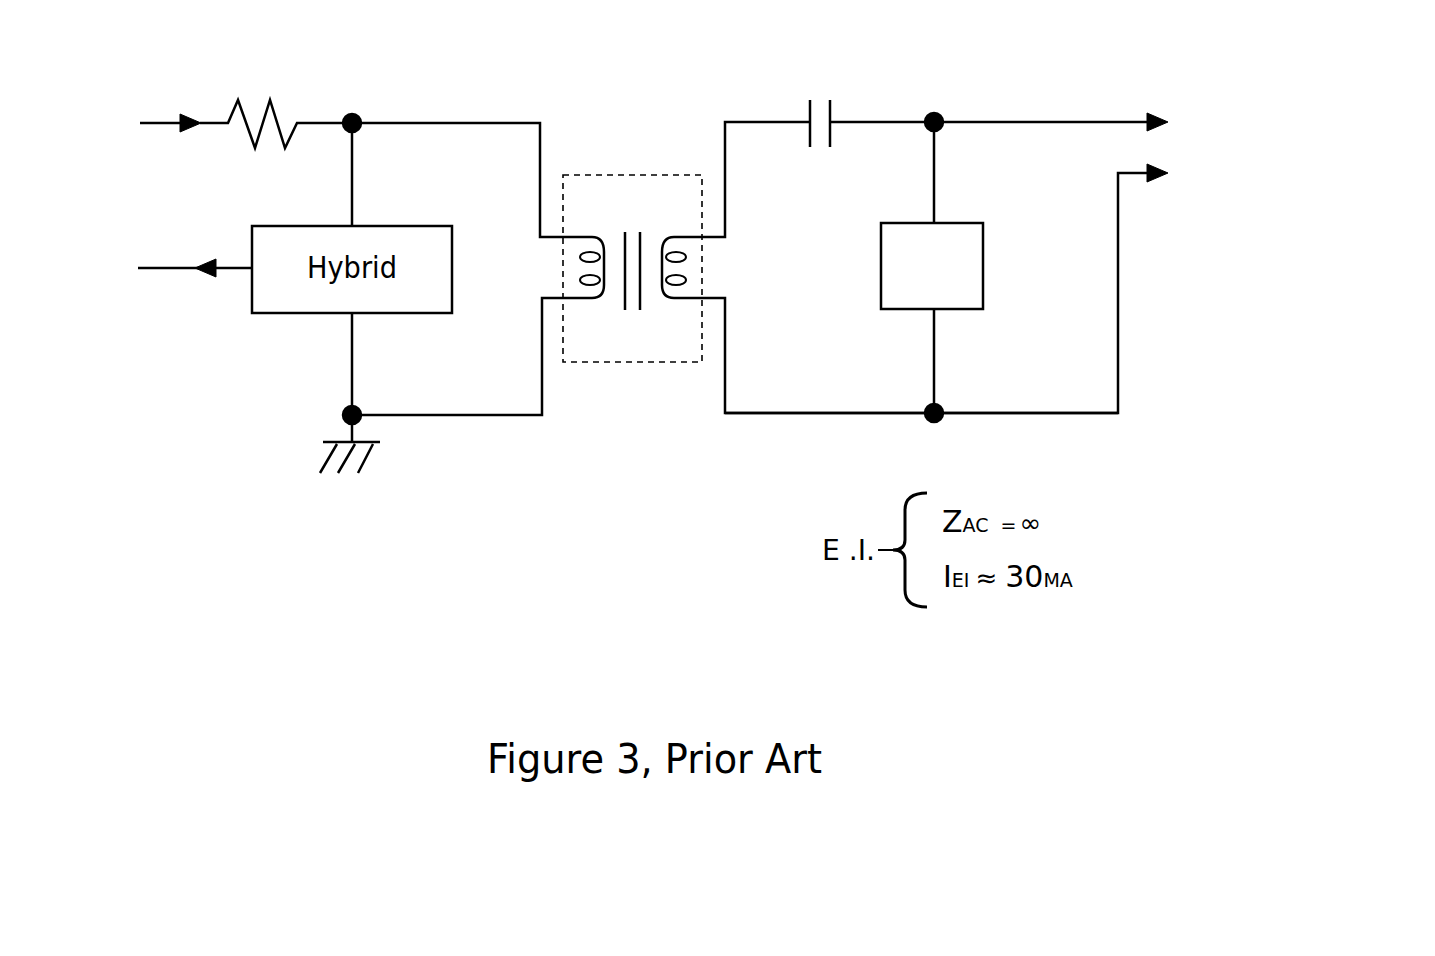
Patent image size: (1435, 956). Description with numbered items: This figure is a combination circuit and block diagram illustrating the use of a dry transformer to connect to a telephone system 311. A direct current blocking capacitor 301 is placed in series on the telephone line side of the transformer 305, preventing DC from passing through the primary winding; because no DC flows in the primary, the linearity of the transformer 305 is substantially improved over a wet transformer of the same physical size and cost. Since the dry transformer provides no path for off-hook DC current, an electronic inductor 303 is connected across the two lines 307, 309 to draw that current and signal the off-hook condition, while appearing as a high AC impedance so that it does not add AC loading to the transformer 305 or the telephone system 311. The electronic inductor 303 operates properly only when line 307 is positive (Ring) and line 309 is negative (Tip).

The direct current blocking capacitor 301 is at (810, 83).
The electronic inductor 303 is at (870, 297).
The transformer 305 is at (640, 362).
The line 307 is at (980, 113).
The line 309 is at (978, 402).
The telephone system 311 is at (1285, 147).